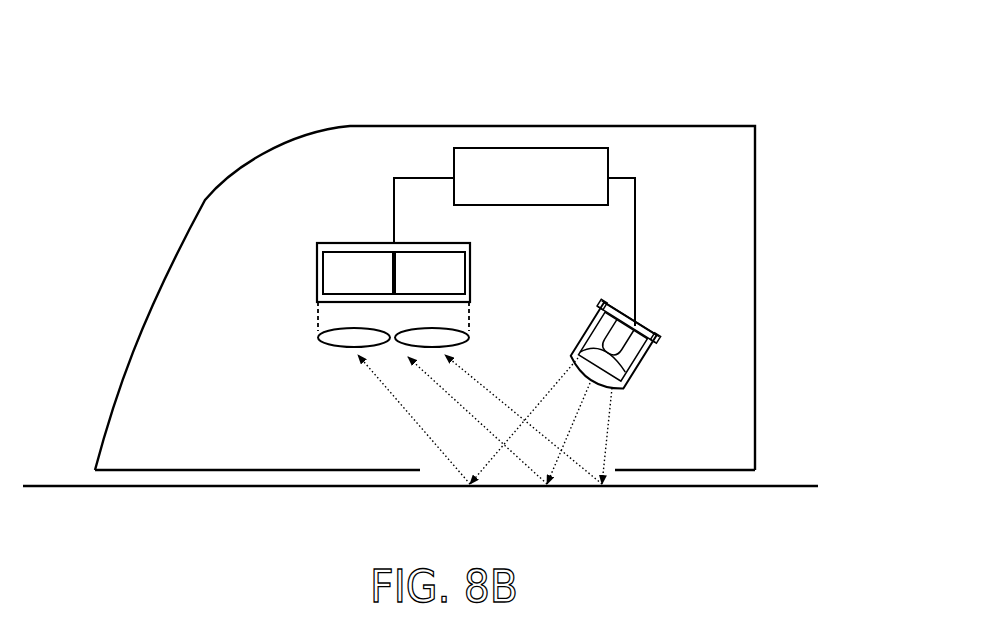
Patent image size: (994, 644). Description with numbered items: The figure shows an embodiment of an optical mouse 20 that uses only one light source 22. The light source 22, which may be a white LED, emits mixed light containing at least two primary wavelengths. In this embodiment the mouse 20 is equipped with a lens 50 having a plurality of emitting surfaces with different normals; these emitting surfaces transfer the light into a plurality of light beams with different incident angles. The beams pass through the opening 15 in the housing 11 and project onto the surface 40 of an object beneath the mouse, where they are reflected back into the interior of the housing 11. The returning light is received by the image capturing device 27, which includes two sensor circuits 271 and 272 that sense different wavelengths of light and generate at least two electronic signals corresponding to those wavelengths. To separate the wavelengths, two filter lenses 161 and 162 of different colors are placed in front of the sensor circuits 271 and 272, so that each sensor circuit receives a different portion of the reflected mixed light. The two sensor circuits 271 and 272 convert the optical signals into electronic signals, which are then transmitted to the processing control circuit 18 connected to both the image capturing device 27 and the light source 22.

The mouse 20 is at (770, 87).
The housing 11 is at (593, 126).
The opening 15 is at (438, 469).
The surface 40 is at (713, 488).
The processing control circuit 18 is at (514, 237).
The image capturing device 27 is at (315, 265).
The first sensor circuit 271 is at (358, 273).
The second sensor circuit 272 is at (430, 273).
The first filter lens 161 is at (319, 348).
The second filter lens 162 is at (472, 343).
The light source 22 is at (597, 306).
The lens 50 is at (568, 347).